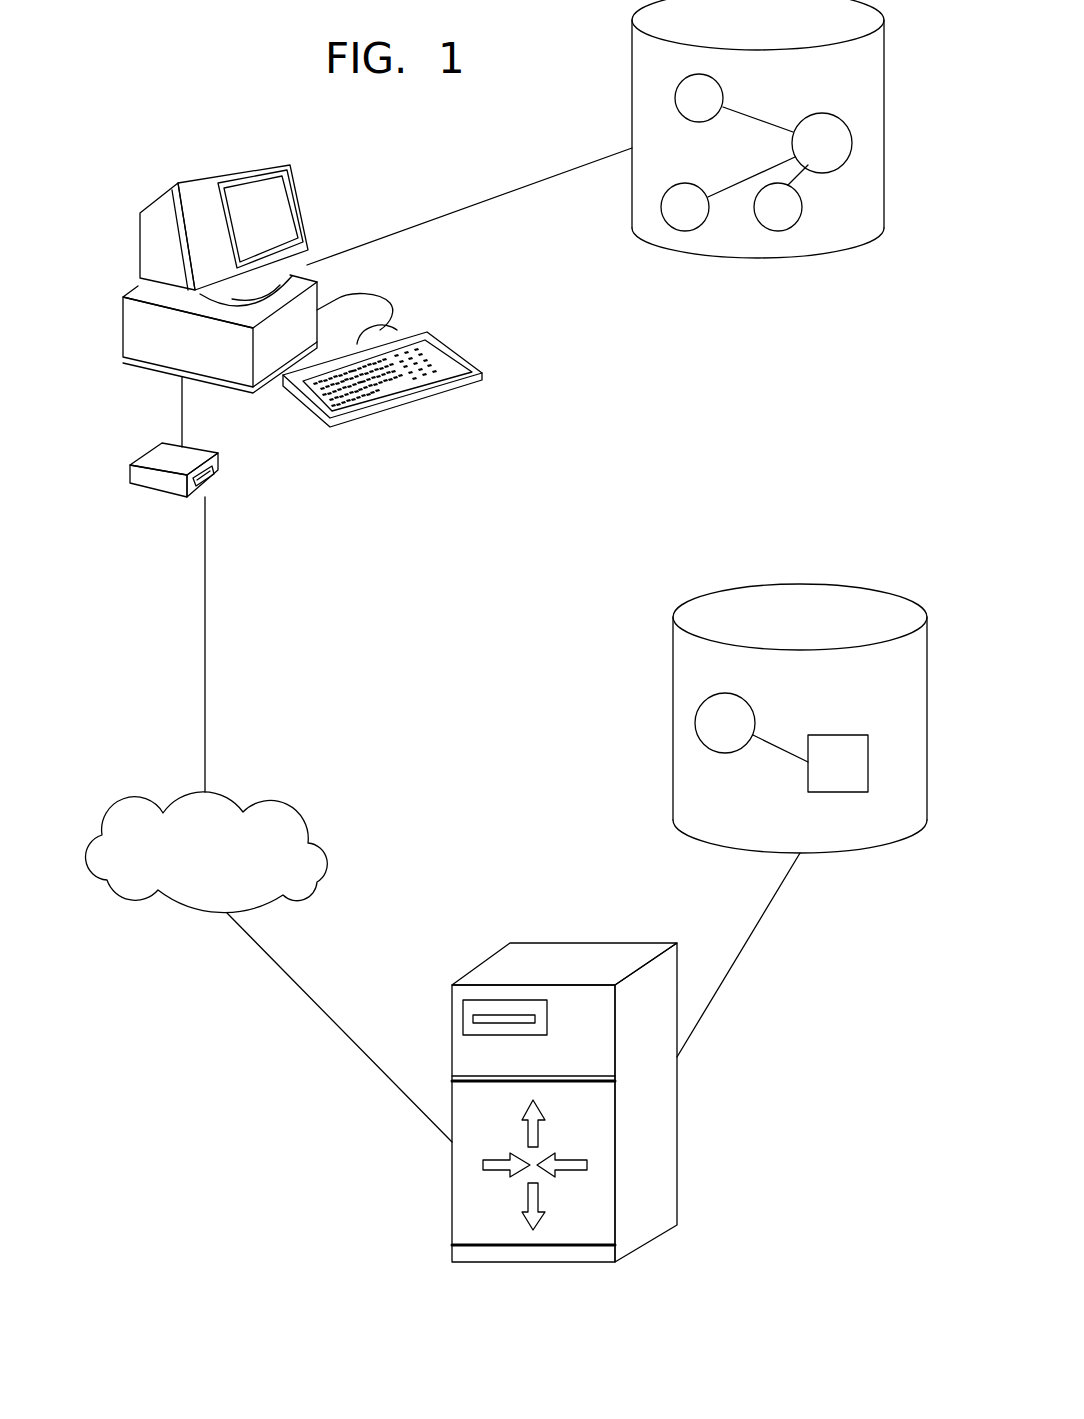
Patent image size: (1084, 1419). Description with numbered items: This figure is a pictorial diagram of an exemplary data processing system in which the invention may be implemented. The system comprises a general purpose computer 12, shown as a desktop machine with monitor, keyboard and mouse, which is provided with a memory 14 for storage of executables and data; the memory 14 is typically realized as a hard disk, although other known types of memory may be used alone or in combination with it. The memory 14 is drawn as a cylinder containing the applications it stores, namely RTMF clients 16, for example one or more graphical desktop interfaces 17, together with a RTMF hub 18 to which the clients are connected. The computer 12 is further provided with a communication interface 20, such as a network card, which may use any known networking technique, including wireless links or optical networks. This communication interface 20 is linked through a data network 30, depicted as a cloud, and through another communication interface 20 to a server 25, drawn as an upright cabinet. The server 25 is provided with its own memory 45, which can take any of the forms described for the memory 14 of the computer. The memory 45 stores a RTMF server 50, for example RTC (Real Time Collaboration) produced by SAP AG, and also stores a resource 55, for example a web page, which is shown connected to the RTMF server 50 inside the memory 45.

The general purpose computer 12 is at (133, 287).
The memory 14 is at (632, 127).
The RTMF clients 16 is at (675, 97).
The graphical desktop interfaces 17 is at (680, 183).
The RTMF hub 18 is at (837, 113).
The communication interface 20 is at (160, 458).
The server 25 is at (483, 968).
The data network 30 is at (140, 812).
The memory 45 is at (672, 721).
The RTMF server 50 is at (738, 695).
The resource 55 is at (842, 735).